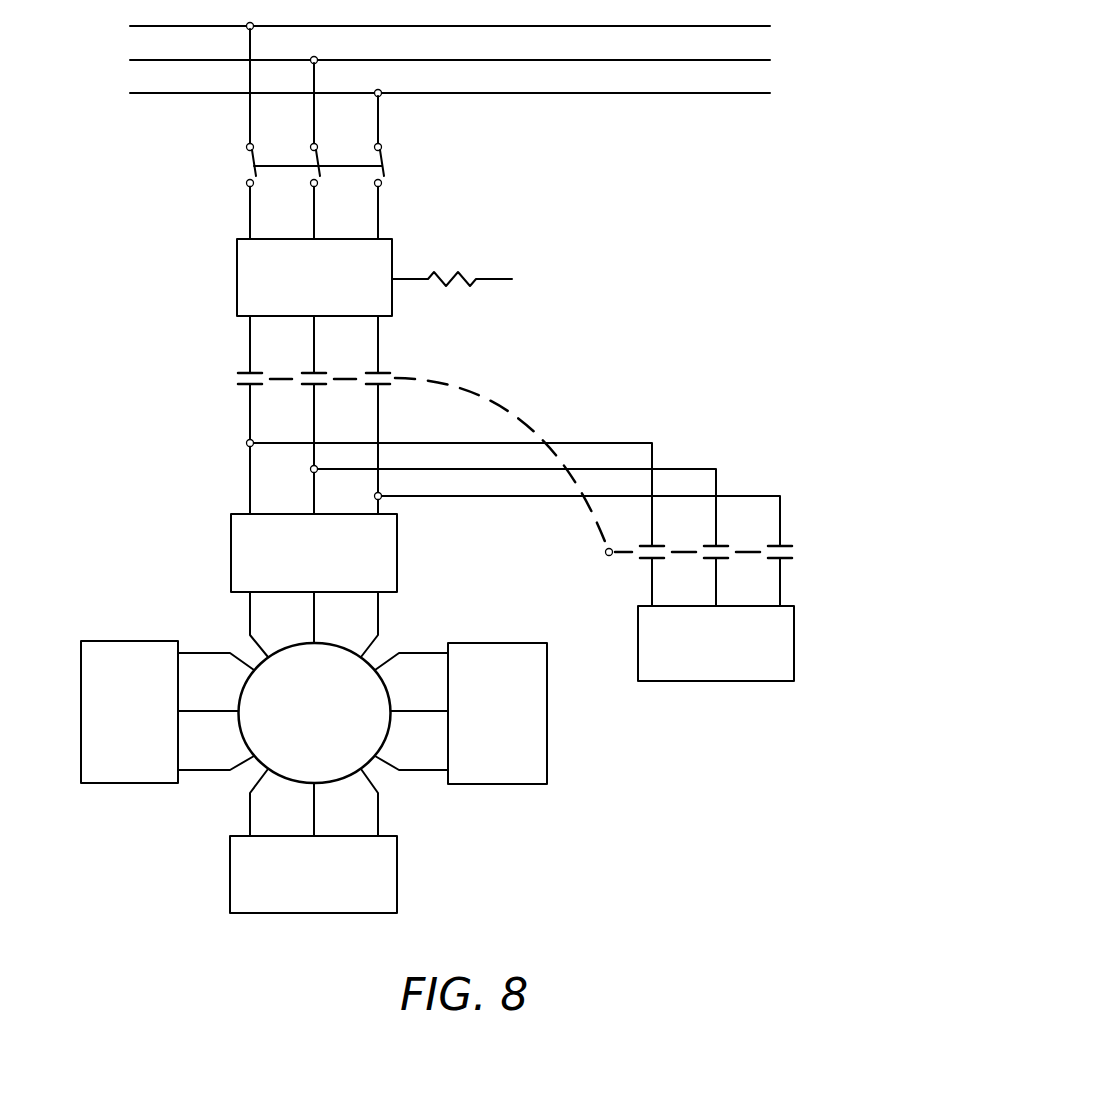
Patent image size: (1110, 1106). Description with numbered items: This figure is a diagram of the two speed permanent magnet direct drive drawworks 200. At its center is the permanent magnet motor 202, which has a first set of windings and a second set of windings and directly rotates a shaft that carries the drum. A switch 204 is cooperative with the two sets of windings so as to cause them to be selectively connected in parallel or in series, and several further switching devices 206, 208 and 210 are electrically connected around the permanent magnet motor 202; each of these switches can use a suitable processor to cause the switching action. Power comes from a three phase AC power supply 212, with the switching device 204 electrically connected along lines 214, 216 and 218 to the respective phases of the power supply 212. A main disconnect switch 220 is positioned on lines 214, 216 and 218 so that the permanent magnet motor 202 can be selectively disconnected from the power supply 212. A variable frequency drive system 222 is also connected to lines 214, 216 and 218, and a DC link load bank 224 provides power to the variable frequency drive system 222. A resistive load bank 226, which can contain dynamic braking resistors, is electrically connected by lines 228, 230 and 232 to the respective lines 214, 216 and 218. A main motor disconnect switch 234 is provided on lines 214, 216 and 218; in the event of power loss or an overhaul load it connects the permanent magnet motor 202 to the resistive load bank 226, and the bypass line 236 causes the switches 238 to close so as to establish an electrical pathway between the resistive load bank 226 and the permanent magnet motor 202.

The permanent magnet direct drive drawworks 200 is at (590, 346).
The permanent magnet motor 202 is at (372, 768).
The switch 204 is at (231, 522).
The switching device 206 is at (105, 641).
The switching device 208 is at (240, 913).
The switching device 210 is at (530, 786).
The three phase AC power supply 212 is at (606, 95).
The line 214 is at (250, 368).
The line 216 is at (314, 352).
The line 218 is at (378, 346).
The main disconnect switch 220 is at (248, 170).
The variable frequency drive system 222 is at (392, 250).
The DC link load bank 224 is at (512, 279).
The resistive load bank 226 is at (782, 681).
The line 228 is at (640, 443).
The line 230 is at (700, 469).
The line 232 is at (762, 496).
The main motor disconnect switch 234 is at (397, 374).
The bypass line 236 is at (590, 513).
The switches 238 is at (793, 553).